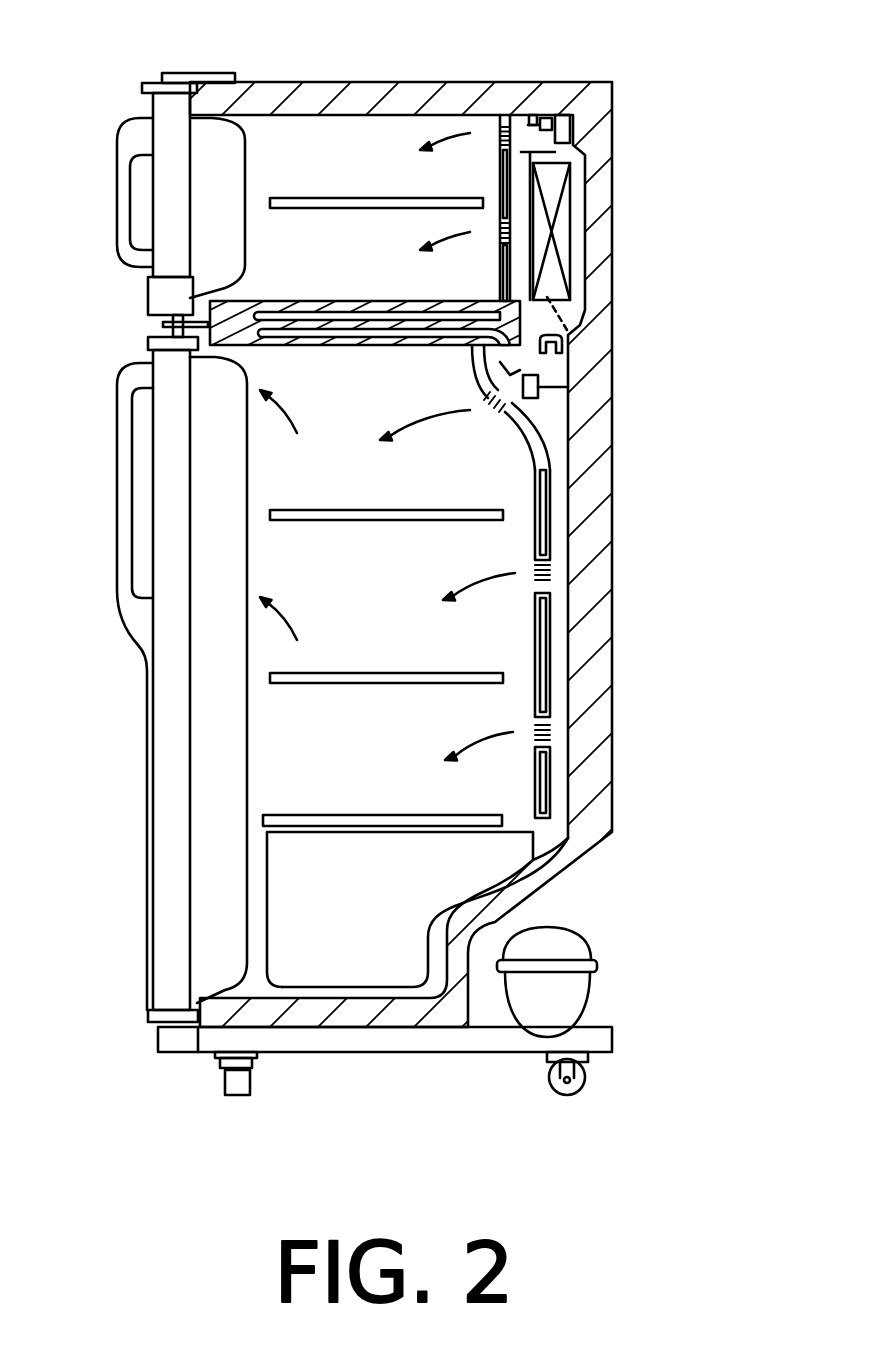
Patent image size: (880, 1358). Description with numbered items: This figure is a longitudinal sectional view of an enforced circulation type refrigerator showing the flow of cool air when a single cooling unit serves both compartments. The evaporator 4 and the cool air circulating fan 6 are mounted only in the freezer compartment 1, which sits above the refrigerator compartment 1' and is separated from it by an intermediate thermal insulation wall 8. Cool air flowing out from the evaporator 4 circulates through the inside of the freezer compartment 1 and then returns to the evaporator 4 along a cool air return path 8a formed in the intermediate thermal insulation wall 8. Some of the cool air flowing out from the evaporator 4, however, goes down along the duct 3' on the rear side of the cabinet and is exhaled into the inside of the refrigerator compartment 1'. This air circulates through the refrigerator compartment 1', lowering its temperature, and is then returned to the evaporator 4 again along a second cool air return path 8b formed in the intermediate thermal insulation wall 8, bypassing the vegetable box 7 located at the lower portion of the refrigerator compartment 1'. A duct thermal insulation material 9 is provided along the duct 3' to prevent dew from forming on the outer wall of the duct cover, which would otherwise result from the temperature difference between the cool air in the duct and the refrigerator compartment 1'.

The freezer compartment 1 is at (440, 550).
The refrigerator compartment 1' is at (157, 679).
The cool air circulating fan 6 is at (563, 118).
The evaporator 4 is at (553, 235).
The intermediate thermal insulation wall 8 is at (210, 303).
The cool air return path 8a is at (447, 298).
The cool air return path 8b is at (400, 347).
The duct 3' is at (620, 644).
The duct thermal insulation material 9 is at (553, 678).
The vegetable box 7 is at (503, 857).